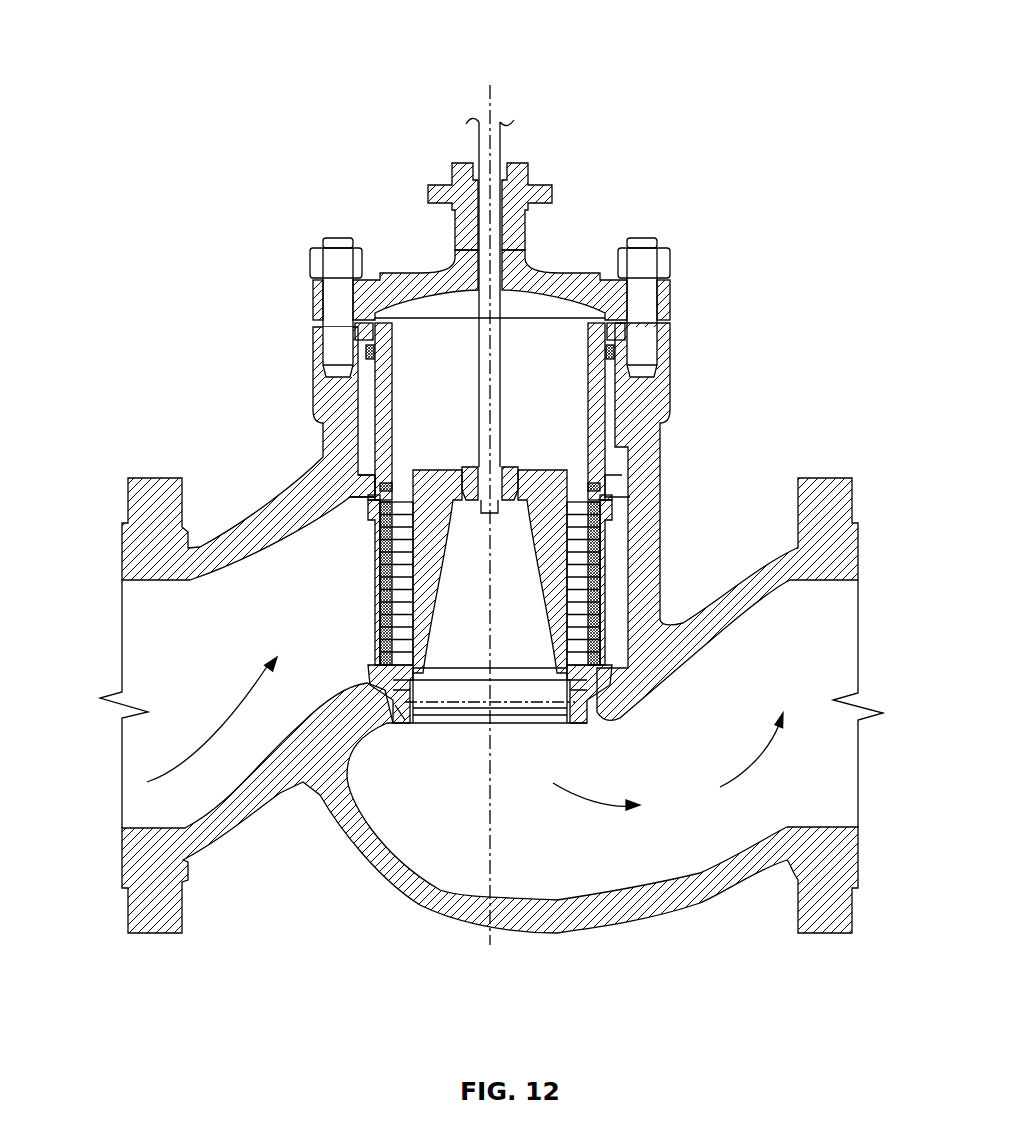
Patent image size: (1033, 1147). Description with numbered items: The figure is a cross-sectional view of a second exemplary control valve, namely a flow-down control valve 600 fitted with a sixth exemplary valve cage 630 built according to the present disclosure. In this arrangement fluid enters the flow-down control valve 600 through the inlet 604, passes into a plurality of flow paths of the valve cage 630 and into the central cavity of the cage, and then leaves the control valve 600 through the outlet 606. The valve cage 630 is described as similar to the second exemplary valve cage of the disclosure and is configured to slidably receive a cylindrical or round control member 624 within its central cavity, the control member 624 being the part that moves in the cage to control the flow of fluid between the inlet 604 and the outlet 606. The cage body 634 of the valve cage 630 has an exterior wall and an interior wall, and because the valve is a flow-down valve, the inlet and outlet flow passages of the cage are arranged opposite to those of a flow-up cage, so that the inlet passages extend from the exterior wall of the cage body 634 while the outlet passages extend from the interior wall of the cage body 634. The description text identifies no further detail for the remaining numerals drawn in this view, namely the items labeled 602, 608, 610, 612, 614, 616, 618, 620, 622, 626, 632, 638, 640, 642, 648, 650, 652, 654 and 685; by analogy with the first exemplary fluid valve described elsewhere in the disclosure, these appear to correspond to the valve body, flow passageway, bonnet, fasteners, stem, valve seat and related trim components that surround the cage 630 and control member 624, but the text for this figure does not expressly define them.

The flow-down control valve 600 is at (120, 34).
The valve body 602 is at (130, 478).
The inlet 604 is at (122, 776).
The outlet 606 is at (858, 773).
The flow path 608 is at (162, 673).
The bonnet 610 is at (422, 272).
The bolts 612 is at (332, 242).
The packing flange 614 is at (505, 185).
The packing follower 616 is at (470, 182).
The valve stem 618 is at (500, 122).
The bonnet flange 620 is at (556, 282).
The stem connector 622 is at (480, 465).
The control member 624 is at (555, 610).
The cage 626 is at (380, 392).
The valve cage 630 is at (648, 585).
The seat ring 632 is at (400, 680).
The cage body 634 is at (380, 610).
The gasket 638 is at (372, 388).
The seal 640 is at (362, 332).
The seat surface 642 is at (375, 482).
The retainer 648 is at (383, 488).
The seat ring 650 is at (375, 672).
The seat 652 is at (462, 700).
The seat retainer 654 is at (597, 722).
The seal ring 685 is at (399, 723).